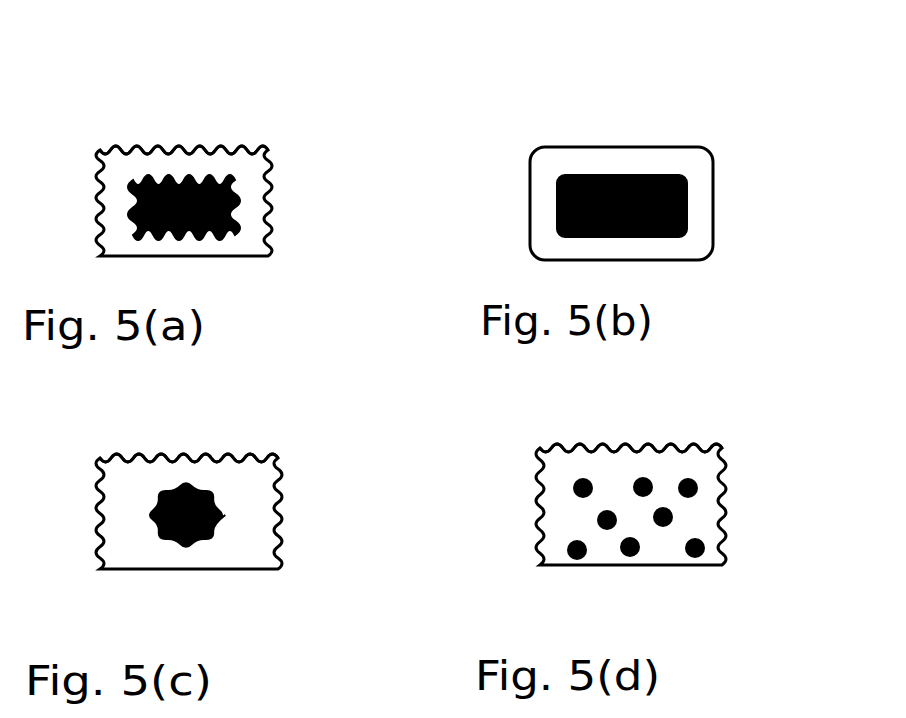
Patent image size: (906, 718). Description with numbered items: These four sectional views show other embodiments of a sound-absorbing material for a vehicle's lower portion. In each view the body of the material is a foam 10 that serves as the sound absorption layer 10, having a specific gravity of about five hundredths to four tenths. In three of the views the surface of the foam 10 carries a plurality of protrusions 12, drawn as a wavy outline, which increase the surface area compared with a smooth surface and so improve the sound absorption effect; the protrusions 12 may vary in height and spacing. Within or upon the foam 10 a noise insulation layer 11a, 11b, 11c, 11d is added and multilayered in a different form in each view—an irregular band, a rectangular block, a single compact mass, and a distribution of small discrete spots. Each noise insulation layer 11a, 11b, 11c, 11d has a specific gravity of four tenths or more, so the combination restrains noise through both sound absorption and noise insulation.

In FIG. 5A, the foam 10 is at (268, 158).
In FIG. 5B, the foam 10 is at (710, 165).
In FIG. 5C, the foam 10 is at (275, 478).
In FIG. 5D, the foam 10 is at (720, 463).
In FIG. 5A, the protrusions 12 is at (163, 148).
In FIG. 5C, the protrusions 12 is at (140, 455).
In FIG. 5D, the protrusions 12 is at (578, 455).
In FIG. 5A, the noise insulation layer 11a is at (237, 211).
In FIG. 5B, the noise insulation layer 11b is at (630, 175).
In FIG. 5C, the noise insulation layer 11c is at (163, 547).
In FIG. 5D, the noise insulation layer 11d is at (688, 480).